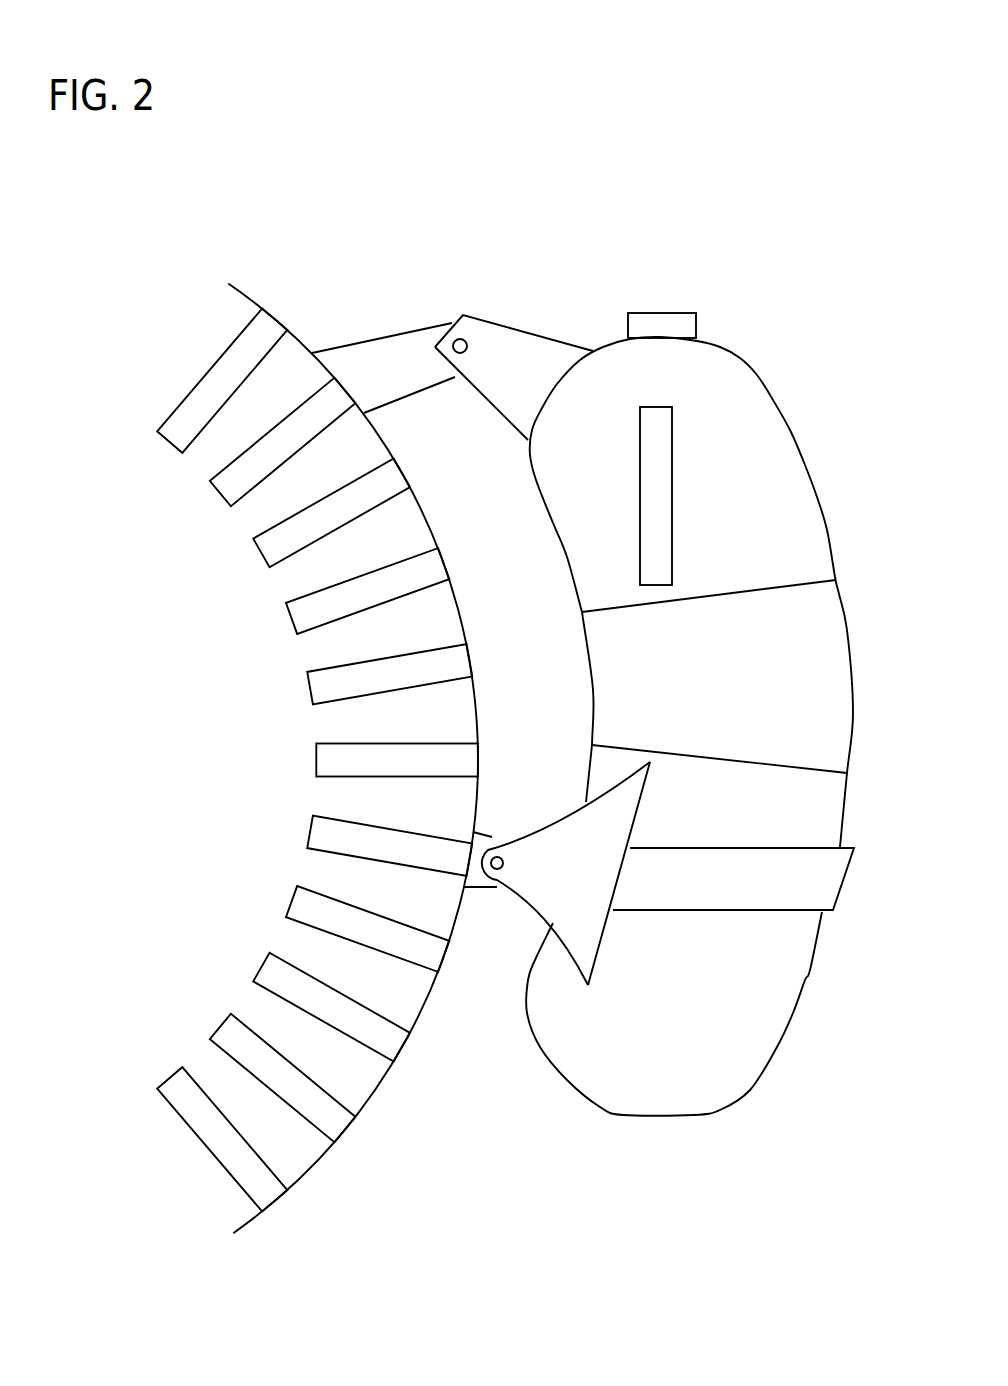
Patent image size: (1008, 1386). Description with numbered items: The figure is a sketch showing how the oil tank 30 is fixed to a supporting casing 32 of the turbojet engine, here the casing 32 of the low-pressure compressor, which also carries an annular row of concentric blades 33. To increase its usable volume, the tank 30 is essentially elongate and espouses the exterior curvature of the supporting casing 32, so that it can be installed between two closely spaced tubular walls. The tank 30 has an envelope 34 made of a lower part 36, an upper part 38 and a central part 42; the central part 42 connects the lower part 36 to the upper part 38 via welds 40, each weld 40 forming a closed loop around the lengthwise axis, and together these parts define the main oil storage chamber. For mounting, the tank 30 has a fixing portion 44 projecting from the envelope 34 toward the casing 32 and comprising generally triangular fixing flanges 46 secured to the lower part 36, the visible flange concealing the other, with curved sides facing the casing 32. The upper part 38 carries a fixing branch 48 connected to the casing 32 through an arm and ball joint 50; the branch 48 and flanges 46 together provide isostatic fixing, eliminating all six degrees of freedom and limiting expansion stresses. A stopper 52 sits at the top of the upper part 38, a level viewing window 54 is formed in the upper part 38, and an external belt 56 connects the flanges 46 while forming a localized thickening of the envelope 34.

The oil tank 30 is at (790, 305).
The supporting casing 32 is at (293, 335).
The blades 33 is at (307, 689).
The envelope 34 is at (545, 1147).
The lower part 36 is at (657, 1032).
The upper part 38 is at (728, 529).
The weld 40 is at (710, 600).
The central part 42 is at (786, 733).
The fixing portion 44 is at (562, 274).
The fixing flange 46 is at (553, 885).
The fixing branch 48 is at (486, 375).
The arm and ball joint 50 is at (376, 377).
The stopper 52 is at (661, 323).
The level viewing window 54 is at (653, 458).
The belt 56 is at (718, 900).